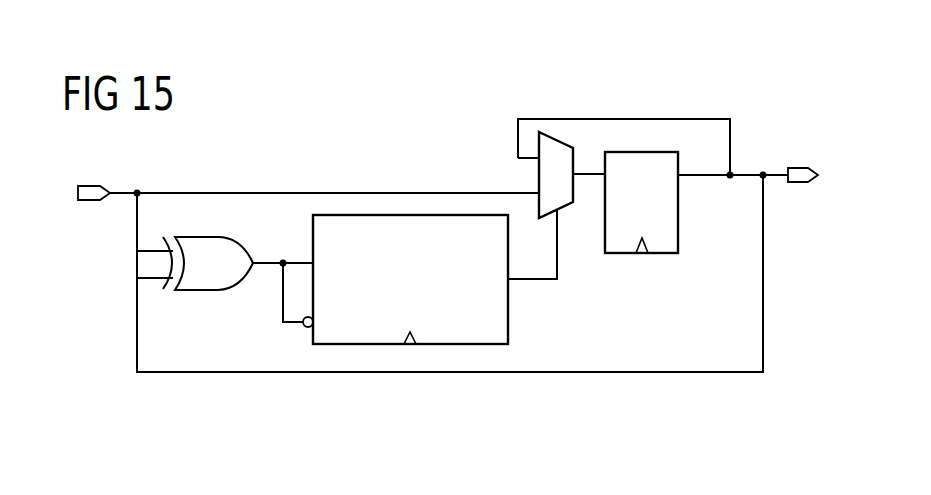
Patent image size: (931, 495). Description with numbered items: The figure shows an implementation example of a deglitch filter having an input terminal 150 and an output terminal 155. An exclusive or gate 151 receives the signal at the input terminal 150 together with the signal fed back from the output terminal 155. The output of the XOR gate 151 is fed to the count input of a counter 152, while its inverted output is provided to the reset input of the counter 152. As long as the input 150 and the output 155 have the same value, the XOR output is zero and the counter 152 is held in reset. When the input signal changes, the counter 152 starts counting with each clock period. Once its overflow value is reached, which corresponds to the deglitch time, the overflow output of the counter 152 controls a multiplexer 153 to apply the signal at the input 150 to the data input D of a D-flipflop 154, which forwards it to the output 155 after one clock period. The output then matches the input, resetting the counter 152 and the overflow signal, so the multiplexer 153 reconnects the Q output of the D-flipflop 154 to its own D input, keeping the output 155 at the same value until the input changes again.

The input terminal 150 is at (93, 204).
The exclusive or gate 151 is at (197, 292).
The counter 152 is at (512, 308).
The multiplexer 153 is at (537, 181).
The D-flipflop 154 is at (679, 198).
The output terminal 155 is at (797, 184).